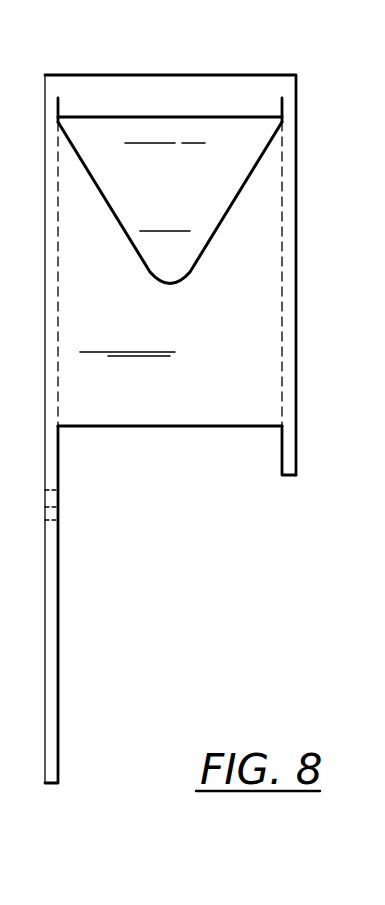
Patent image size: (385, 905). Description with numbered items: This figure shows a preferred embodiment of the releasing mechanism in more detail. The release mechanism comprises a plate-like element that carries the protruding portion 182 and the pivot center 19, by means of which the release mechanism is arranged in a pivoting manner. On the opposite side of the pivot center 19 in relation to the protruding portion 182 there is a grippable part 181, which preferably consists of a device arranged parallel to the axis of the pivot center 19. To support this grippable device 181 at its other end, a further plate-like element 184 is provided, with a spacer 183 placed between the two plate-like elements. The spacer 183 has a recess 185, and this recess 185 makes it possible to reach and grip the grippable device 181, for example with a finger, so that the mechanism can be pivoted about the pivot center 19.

The grippable part 181 is at (195, 100).
The protruding portion 182 is at (50, 660).
The spacer 183 is at (236, 426).
The further plate-like element 184 is at (288, 436).
The recess 185 is at (224, 180).
The pivot center 19 is at (58, 507).